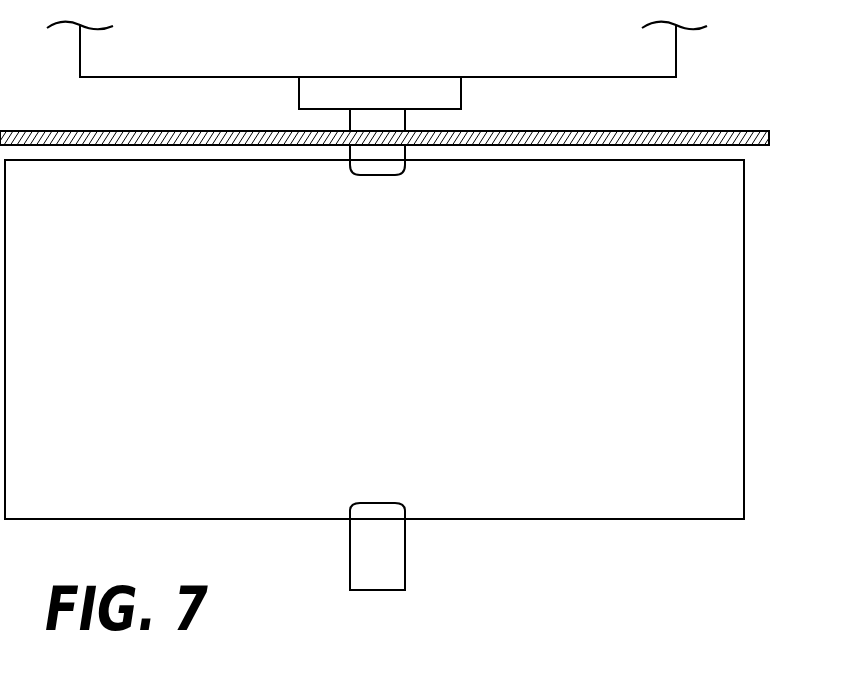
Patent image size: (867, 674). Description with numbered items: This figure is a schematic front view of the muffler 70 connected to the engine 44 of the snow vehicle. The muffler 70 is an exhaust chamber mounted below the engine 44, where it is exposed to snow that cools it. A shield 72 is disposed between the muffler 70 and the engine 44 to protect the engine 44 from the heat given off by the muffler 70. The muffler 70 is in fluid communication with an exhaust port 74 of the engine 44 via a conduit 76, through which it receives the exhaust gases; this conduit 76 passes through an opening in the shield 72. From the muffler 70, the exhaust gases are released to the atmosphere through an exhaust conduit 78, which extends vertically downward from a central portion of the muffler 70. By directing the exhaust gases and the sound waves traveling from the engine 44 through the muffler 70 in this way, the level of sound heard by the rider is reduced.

The engine 44 is at (373, 35).
The muffler 70 is at (389, 352).
The shield 72 is at (692, 130).
The exhaust port 74 is at (461, 88).
The conduit 76 is at (350, 121).
The exhaust conduit 78 is at (350, 548).